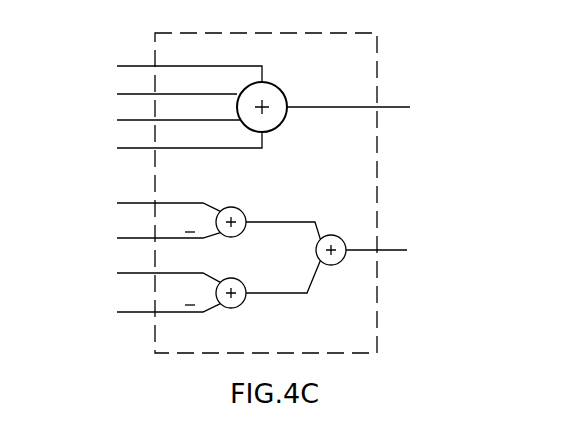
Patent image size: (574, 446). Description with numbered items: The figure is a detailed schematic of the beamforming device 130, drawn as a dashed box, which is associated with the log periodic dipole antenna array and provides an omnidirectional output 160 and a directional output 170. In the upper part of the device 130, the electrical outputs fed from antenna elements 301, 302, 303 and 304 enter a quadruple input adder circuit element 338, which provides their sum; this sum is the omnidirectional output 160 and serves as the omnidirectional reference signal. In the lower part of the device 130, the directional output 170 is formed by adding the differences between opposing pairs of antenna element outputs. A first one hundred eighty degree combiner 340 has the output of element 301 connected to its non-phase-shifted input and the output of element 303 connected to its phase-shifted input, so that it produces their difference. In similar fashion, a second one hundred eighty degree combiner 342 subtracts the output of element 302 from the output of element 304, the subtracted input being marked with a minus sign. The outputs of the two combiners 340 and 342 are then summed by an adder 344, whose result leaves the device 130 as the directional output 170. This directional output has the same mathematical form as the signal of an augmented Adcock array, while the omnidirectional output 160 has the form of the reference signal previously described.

The beamforming device 130 is at (356, 33).
The omnidirectional output 160 is at (392, 107).
The directional output 170 is at (385, 250).
The antenna element 301 is at (162, 135).
The antenna element 302 is at (149, 202).
The antenna element 303 is at (151, 180).
The antenna element 304 is at (162, 208).
The quadruple input adder circuit element 338 is at (275, 78).
The 180° combiner 340 is at (238, 208).
The 180° combiner 342 is at (239, 306).
The adder 344 is at (294, 221).